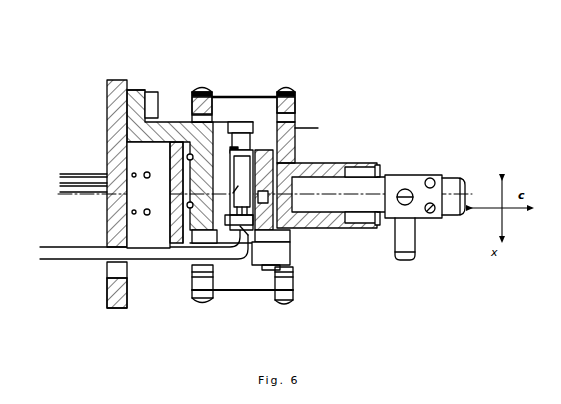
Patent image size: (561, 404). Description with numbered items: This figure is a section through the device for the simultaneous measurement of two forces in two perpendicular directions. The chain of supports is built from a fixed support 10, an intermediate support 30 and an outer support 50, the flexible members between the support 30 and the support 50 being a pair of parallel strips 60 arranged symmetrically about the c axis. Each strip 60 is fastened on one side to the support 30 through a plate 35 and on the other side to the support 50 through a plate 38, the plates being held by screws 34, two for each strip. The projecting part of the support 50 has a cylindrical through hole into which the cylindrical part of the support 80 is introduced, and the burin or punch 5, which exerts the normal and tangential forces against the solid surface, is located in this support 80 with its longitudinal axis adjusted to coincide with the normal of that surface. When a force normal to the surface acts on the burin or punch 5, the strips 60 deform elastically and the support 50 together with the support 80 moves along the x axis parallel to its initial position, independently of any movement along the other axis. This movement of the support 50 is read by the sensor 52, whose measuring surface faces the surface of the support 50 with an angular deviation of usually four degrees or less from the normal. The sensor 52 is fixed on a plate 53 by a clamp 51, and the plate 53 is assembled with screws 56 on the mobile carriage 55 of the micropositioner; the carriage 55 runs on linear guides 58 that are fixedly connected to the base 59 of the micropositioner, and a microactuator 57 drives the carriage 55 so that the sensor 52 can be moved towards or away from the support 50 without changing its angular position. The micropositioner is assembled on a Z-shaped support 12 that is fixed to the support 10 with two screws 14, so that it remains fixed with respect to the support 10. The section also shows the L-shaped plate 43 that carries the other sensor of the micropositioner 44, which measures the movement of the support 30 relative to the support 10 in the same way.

The burin or punch 5 is at (408, 242).
The fixed support 10 is at (113, 86).
The Z-shaped support 12 is at (140, 90).
The screws 14 is at (152, 92).
The support 30 is at (200, 283).
The screws 34 is at (197, 88).
The plates 35 is at (193, 97).
The plates 38 is at (295, 93).
The L-shaped plate 43 is at (165, 278).
The micropositioner 44 is at (153, 226).
The support 50 is at (327, 165).
The clamp 51 is at (262, 270).
The sensor 52 is at (280, 258).
The plate 53 is at (287, 233).
The mobile carriage of the micropositioner 55 is at (230, 232).
The screws 56 is at (248, 218).
The microactuator 57 is at (240, 150).
The linear guides 58 is at (241, 128).
The base of the micropositioner 59 is at (237, 194).
The parallel strips 60 is at (233, 128).
The support 80 is at (400, 178).